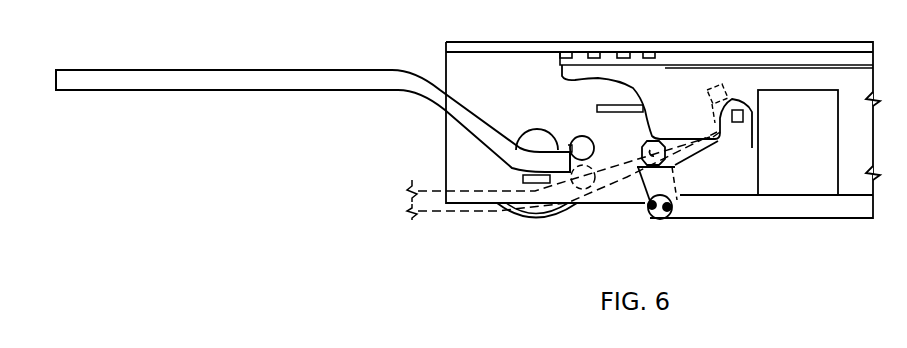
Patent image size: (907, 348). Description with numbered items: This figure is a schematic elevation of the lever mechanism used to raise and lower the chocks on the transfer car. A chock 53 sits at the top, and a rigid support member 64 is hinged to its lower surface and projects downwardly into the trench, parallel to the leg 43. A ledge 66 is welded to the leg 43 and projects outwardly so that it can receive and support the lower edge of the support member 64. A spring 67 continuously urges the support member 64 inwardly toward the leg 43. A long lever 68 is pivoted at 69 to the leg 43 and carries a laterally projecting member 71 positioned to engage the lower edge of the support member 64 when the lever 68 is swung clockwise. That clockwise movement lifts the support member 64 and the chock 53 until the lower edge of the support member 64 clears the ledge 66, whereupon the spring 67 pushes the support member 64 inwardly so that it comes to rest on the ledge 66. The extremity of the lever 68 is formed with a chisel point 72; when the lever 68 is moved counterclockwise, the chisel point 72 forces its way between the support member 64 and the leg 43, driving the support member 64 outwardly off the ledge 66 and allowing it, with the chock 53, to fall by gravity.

The leg 43 is at (505, 92).
The chock 53 is at (707, 47).
The support member 64 is at (720, 77).
The ledge 66 is at (625, 109).
The spring 67 is at (798, 142).
The lever 68 is at (364, 78).
The pivot 69 is at (677, 165).
The laterally projecting member 71 is at (578, 147).
The chisel point 72 is at (742, 115).